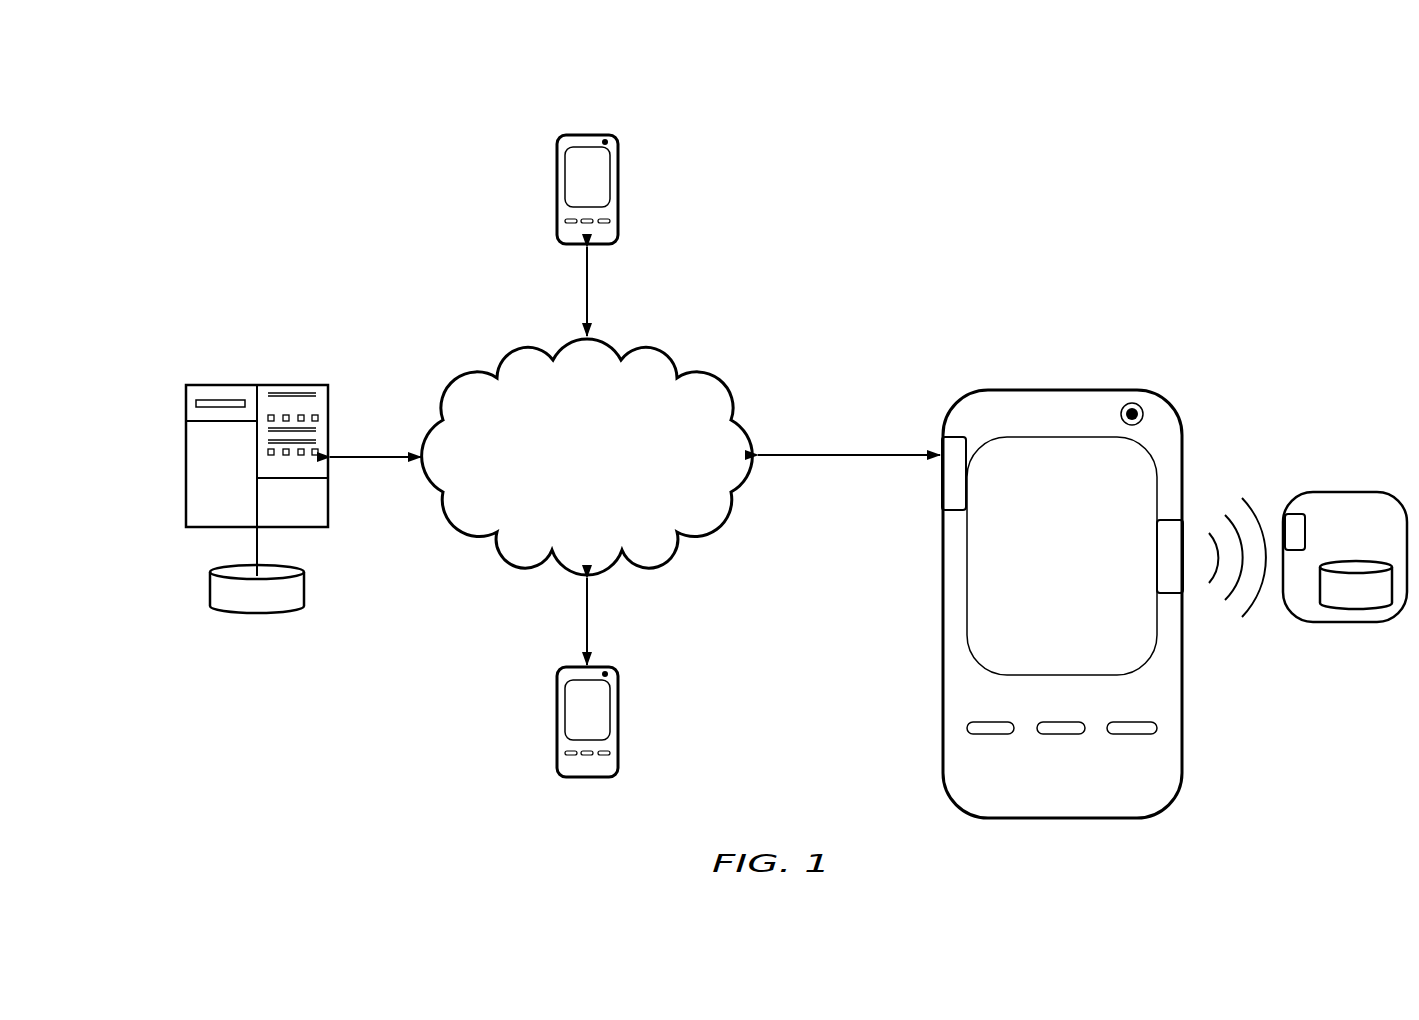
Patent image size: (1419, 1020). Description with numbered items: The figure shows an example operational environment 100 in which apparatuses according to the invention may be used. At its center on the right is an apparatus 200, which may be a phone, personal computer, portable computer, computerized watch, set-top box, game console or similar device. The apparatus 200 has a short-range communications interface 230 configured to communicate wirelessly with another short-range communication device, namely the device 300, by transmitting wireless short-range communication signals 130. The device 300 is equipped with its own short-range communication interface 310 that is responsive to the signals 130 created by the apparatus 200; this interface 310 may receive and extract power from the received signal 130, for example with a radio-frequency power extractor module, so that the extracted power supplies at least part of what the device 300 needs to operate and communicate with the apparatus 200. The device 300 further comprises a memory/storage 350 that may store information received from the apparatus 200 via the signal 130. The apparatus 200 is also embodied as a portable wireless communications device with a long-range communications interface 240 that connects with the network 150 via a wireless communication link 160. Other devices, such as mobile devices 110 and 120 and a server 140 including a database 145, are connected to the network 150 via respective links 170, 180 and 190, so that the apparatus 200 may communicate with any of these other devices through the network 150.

The operational environment 100 is at (1080, 132).
The mobile device 110 is at (587, 779).
The mobile device 120 is at (588, 133).
The short-range communication signals 130 is at (1232, 622).
The server 140 is at (186, 453).
The database 145 is at (208, 592).
The network 150 is at (728, 380).
The wireless communication link 160 is at (848, 452).
The link 170 is at (584, 291).
The link 180 is at (584, 621).
The link 190 is at (372, 452).
The apparatus 200 is at (1064, 385).
The short-range communications interface 230 is at (1186, 540).
The long-range communications interface 240 is at (940, 476).
The device 300 is at (1375, 488).
The short-range communication interface 310 is at (1306, 533).
The memory/storage 350 is at (1355, 566).